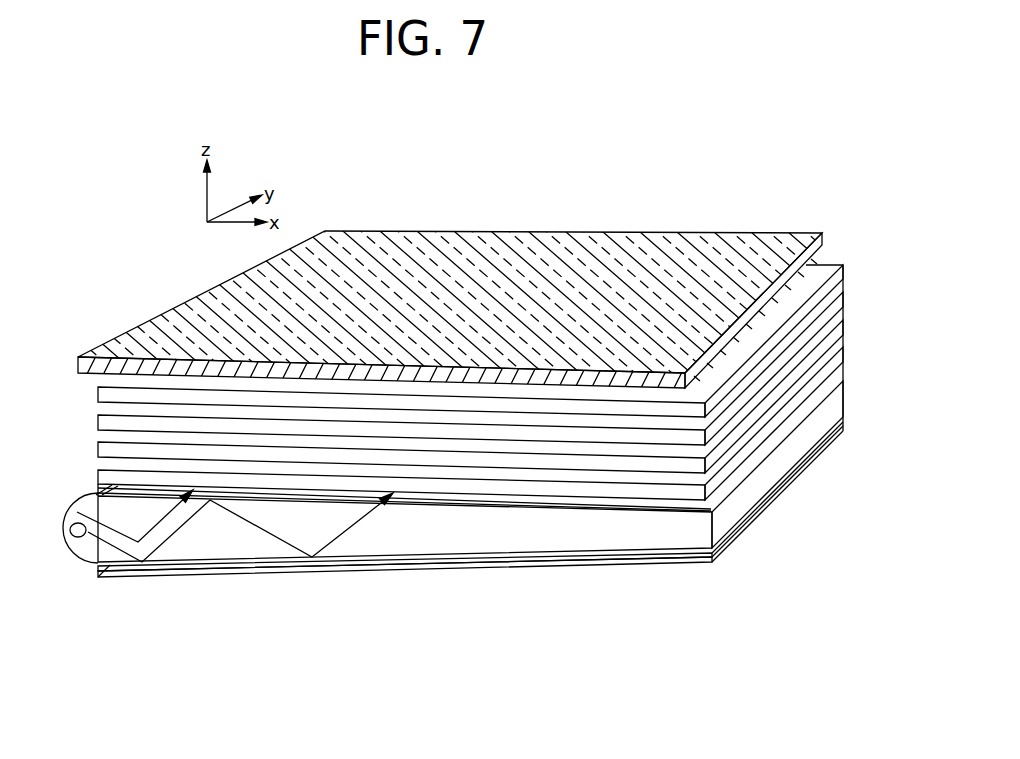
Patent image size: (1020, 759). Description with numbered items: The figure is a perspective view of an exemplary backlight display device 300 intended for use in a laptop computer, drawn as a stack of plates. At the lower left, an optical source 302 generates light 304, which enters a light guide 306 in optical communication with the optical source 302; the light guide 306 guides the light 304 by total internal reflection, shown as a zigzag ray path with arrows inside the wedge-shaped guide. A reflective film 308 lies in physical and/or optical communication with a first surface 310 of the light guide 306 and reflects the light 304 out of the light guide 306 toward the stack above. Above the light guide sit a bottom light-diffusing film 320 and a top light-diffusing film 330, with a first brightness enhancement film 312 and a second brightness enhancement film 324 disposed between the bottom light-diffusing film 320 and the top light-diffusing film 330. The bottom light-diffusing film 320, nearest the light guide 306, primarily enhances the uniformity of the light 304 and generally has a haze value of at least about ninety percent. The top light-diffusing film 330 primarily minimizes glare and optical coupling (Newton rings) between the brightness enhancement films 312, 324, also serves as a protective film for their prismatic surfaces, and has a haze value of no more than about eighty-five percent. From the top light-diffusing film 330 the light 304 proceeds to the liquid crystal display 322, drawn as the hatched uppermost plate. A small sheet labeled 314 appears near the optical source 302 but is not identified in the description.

The backlight display device 300 is at (128, 250).
The optical source 302 is at (73, 538).
The light 304 is at (275, 540).
The light guide 306 is at (242, 540).
The reflective film 308 is at (660, 565).
The first surface 310 is at (483, 555).
The first brightness enhancement film 312 is at (98, 448).
The thin sheet / reflector 314 is at (98, 488).
The bottom light-diffusing film 320 is at (98, 476).
The liquid crystal display 322 is at (762, 233).
The second brightness enhancement film 324 is at (98, 420).
The top light-diffusing film 330 is at (98, 392).